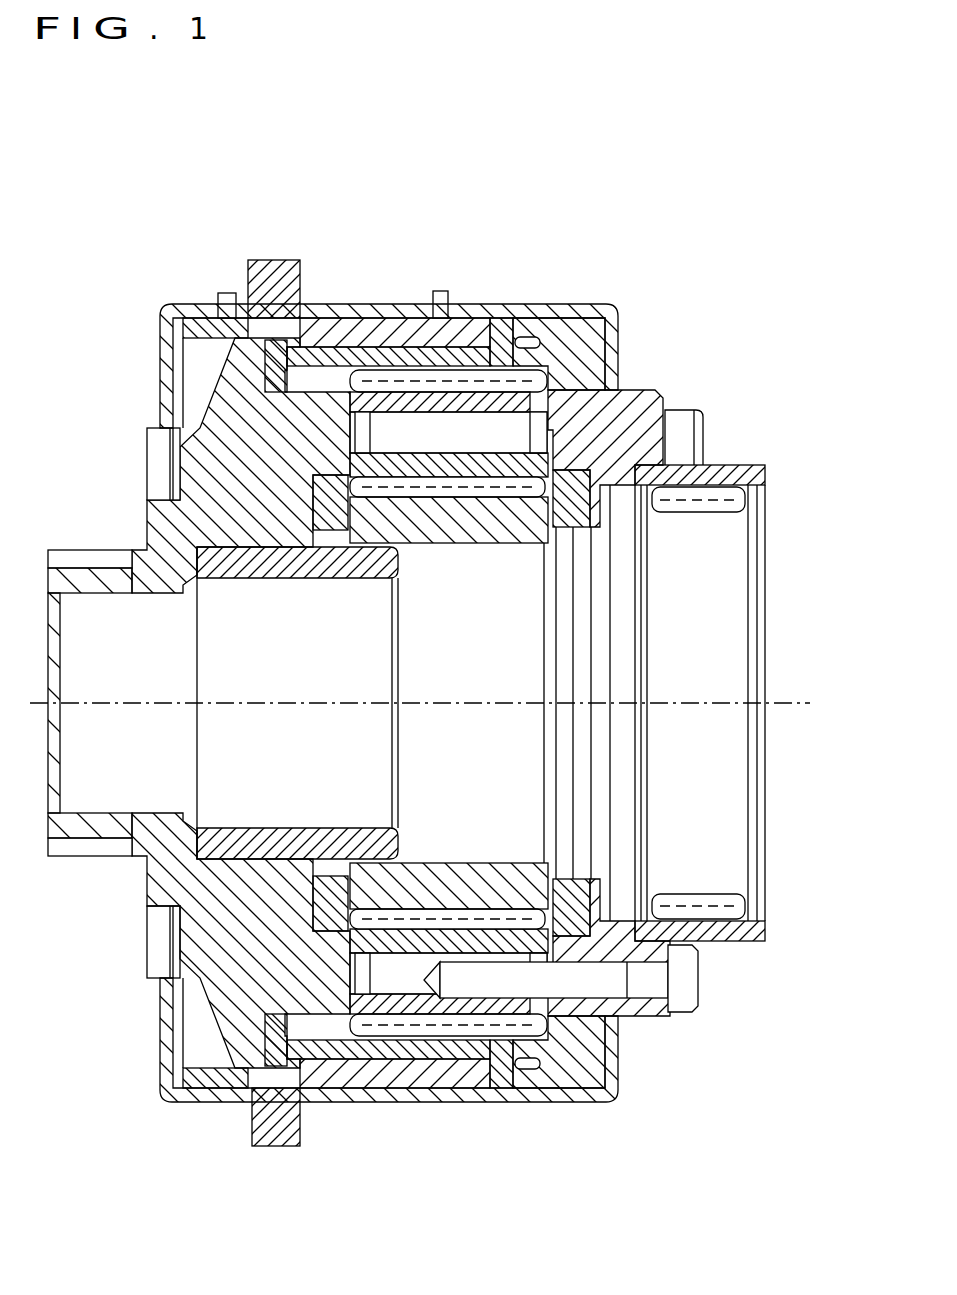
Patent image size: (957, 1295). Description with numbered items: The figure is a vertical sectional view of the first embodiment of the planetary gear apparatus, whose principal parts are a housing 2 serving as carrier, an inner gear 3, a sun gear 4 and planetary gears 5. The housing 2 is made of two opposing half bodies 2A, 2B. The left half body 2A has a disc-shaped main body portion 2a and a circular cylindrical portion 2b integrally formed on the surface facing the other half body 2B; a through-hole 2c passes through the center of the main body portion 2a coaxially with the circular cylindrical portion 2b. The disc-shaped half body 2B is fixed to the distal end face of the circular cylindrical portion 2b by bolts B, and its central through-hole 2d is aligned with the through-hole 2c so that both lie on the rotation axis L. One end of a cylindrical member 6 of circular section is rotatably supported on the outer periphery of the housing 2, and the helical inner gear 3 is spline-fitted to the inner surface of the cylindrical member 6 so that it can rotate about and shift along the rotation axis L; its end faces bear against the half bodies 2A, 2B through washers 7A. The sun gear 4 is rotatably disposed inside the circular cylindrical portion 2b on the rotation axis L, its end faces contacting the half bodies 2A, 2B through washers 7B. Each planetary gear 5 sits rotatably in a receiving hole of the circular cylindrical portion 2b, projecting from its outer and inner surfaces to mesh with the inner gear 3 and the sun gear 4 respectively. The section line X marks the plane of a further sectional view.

The housing (carrier) 2 is at (406, 750).
The half body 2A is at (508, 1100).
The half body 2B is at (565, 1100).
The main body portion 2a is at (202, 947).
The circular cylindrical portion 2b is at (347, 1100).
The through-hole 2c is at (128, 593).
The through-hole 2d is at (722, 485).
The inner gear 3 is at (337, 360).
The sun gear 4 is at (475, 545).
The planetary gears 5 is at (471, 400).
The cylindrical member 6 is at (273, 258).
The washers 7A is at (505, 342).
The washers 7B is at (612, 430).
The bolts B is at (705, 987).
The rotation axis L is at (800, 700).
The section line X is at (388, 248).